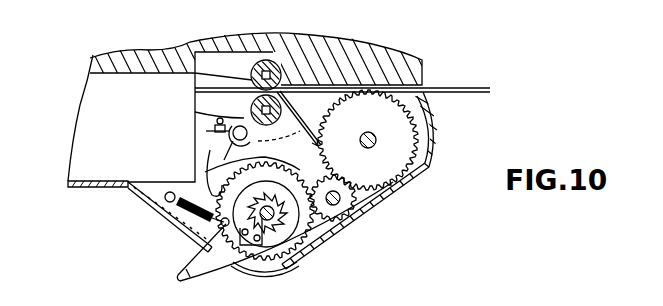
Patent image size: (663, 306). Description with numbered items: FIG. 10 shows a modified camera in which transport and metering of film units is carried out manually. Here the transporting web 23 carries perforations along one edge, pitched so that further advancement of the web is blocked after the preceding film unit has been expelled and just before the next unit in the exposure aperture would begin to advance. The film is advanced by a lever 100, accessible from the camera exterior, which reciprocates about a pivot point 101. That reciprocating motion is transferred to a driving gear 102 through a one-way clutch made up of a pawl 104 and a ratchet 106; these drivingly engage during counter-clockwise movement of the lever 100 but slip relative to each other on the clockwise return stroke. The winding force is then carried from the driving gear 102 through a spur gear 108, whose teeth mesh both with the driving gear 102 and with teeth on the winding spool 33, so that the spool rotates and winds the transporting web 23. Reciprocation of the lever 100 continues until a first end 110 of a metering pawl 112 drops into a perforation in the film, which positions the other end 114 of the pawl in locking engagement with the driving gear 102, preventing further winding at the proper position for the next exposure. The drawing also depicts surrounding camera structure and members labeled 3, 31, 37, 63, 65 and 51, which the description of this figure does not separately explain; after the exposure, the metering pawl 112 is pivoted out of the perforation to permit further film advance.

The housing 3 is at (95, 152).
The bottom wall 31 is at (118, 182).
The wall 37 is at (20, 305).
The upper feed roller 63 is at (281, 67).
The lower feed roller 65 is at (255, 110).
The transporting web 23 is at (292, 108).
The first end of metering pawl 110 is at (336, 119).
The winding spool 33 is at (400, 132).
The curved guide strip 51 is at (428, 160).
The spur gear 108 is at (364, 212).
The ratchet 106 is at (318, 228).
The pivot point 101 is at (305, 250).
The pawl 104 is at (272, 222).
The driving gear 102 is at (313, 221).
The lever 100 is at (183, 266).
The metering pawl 112 is at (232, 152).
The other end of metering pawl 114 is at (228, 165).